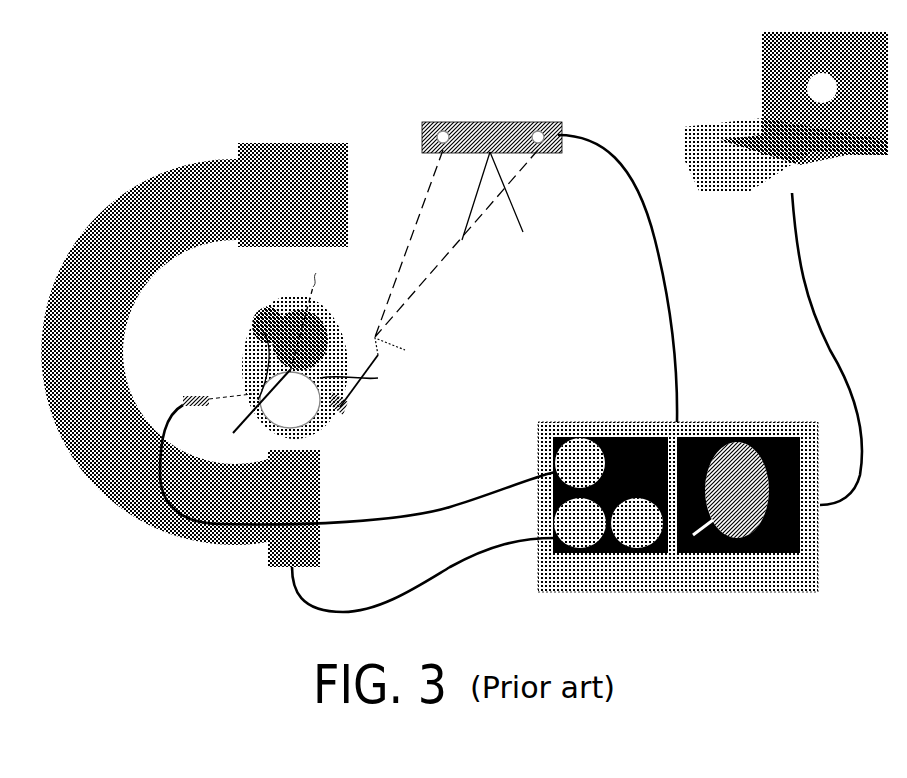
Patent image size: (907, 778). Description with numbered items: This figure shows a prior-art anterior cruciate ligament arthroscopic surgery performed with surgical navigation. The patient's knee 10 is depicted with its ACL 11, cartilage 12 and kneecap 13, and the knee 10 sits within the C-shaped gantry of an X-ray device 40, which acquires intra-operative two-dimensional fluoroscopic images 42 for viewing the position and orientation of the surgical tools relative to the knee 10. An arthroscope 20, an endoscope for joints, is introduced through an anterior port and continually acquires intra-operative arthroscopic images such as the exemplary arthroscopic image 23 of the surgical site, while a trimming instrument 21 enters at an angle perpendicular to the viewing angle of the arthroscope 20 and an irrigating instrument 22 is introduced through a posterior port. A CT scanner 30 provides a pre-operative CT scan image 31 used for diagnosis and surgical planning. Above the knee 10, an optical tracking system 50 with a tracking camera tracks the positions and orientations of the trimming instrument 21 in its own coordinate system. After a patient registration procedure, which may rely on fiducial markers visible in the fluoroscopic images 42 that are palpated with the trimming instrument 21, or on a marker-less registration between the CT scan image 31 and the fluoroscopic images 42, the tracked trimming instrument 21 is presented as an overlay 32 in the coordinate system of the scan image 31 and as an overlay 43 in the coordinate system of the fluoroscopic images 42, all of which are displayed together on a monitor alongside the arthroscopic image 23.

The knee 10 is at (250, 330).
The ACL 11 is at (365, 379).
The cartilage 12 is at (246, 415).
The kneecap 13 is at (267, 313).
The arthroscope 20 is at (183, 398).
The trimming instrument 21 is at (348, 403).
The irrigating instrument 22 is at (317, 278).
The arthroscopic image 23 is at (580, 437).
The CT scanner 30 is at (692, 122).
The CT scan image 31 is at (788, 536).
The overlay 32 is at (693, 536).
The X-ray device 40 is at (128, 190).
The fluoroscopic images 42 is at (578, 553).
The overlay 43 is at (645, 548).
The optical tracking system 50 is at (507, 120).